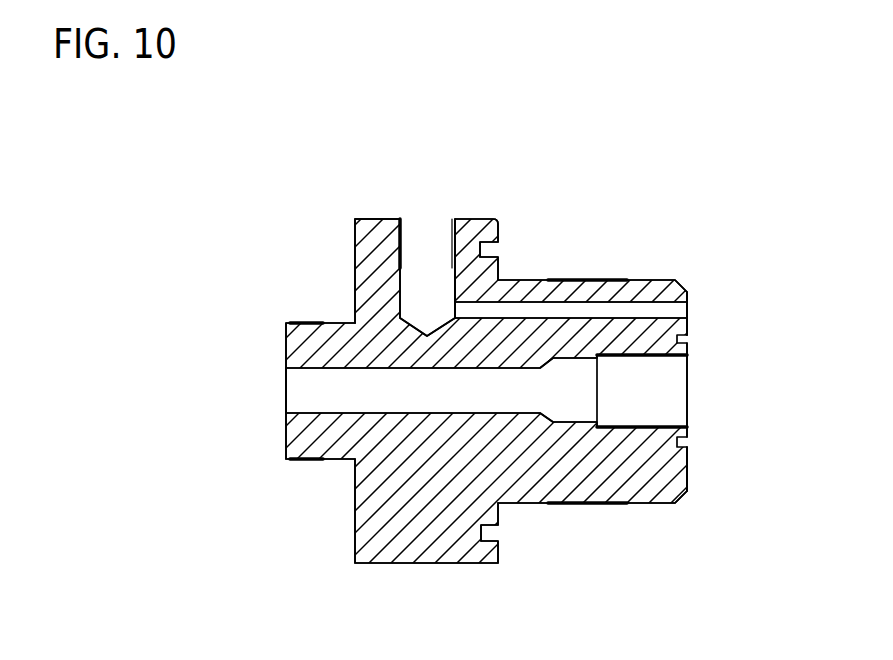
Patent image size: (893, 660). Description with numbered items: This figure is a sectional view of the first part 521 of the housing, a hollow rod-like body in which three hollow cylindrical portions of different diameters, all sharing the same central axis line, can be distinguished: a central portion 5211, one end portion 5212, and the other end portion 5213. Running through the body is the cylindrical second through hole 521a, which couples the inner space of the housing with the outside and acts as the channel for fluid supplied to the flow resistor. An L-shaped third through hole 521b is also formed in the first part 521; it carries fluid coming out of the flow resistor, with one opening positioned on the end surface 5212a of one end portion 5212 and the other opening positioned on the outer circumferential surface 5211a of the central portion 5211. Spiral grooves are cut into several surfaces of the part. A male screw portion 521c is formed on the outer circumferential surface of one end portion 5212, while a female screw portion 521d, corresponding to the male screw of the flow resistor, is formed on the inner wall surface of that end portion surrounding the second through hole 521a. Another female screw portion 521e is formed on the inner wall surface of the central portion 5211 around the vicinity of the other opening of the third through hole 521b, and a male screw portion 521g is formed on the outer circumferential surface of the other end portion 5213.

The first part 521 is at (753, 138).
The central portion 5211 is at (498, 138).
The one end portion 5212 is at (687, 138).
The other end portion 5213 is at (357, 138).
The second through hole 521a is at (322, 411).
The third through hole 521b is at (526, 312).
The male screw portion 521c is at (608, 278).
The female screw portion 521d is at (658, 357).
The female screw portion 521e is at (456, 242).
The male screw portion 521g is at (300, 323).
The outer circumferential surface 5211a is at (377, 219).
The end surface 5212a is at (687, 323).